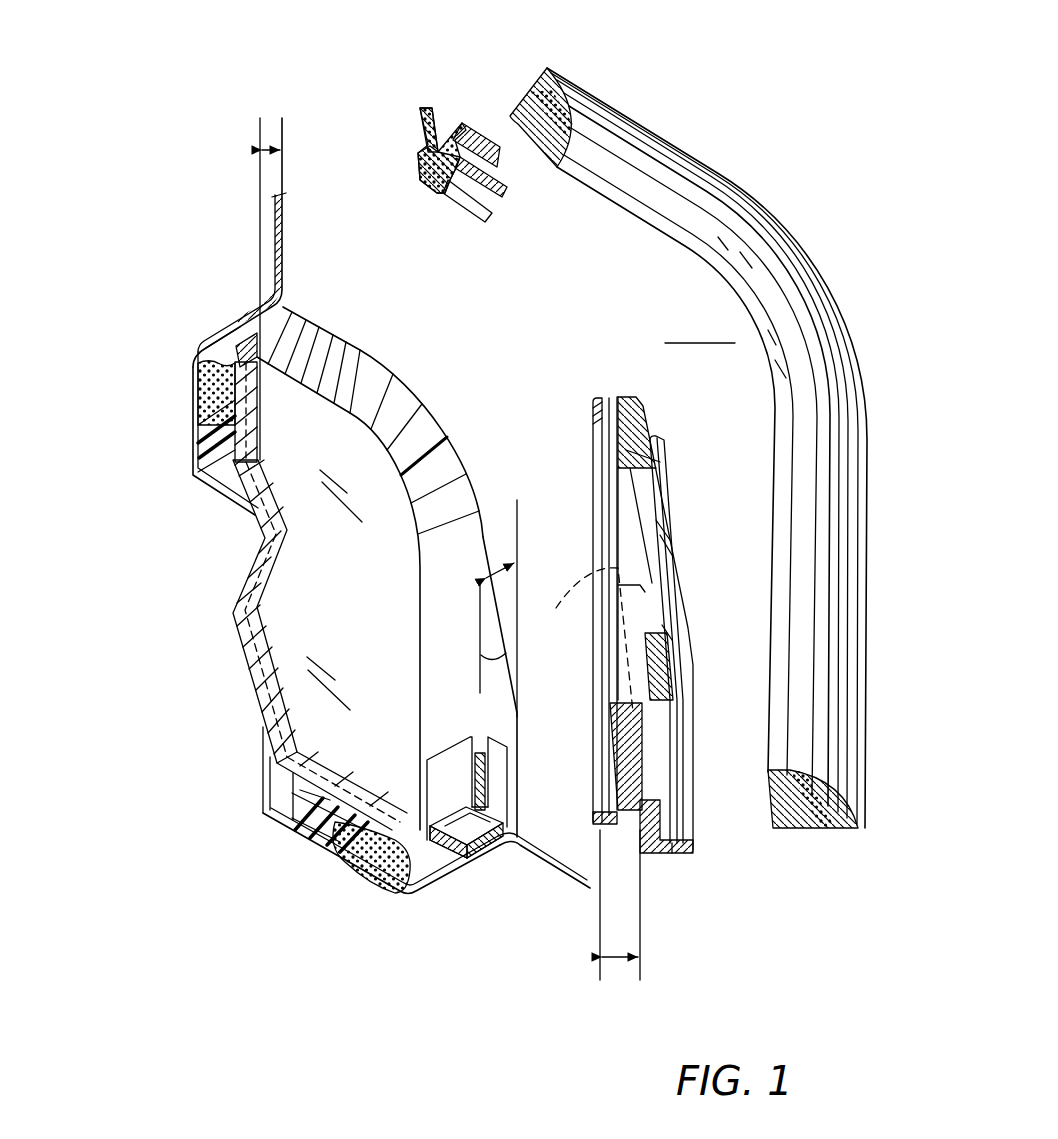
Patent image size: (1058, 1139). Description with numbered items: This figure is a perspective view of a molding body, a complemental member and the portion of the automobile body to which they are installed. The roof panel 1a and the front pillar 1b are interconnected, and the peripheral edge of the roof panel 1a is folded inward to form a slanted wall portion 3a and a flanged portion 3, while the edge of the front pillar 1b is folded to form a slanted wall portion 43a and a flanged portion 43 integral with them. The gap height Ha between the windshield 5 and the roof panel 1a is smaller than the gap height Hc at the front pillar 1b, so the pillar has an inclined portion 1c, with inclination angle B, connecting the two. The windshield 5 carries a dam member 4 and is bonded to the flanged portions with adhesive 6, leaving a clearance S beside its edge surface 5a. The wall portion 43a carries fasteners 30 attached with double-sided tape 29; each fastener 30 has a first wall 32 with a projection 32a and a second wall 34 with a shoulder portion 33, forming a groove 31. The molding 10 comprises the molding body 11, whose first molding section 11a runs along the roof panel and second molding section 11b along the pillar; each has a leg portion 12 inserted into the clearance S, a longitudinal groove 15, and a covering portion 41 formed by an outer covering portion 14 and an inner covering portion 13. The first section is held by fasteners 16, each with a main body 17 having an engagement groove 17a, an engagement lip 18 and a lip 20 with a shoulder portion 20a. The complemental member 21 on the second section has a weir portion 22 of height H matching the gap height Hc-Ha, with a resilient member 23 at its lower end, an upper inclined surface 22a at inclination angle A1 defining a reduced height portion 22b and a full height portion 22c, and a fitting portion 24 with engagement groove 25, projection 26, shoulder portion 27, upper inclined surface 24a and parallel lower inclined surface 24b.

The roof panel 1a is at (270, 230).
The front pillar 1b is at (545, 884).
The inclined portion 1c is at (498, 640).
The flanged portion 3 is at (190, 412).
The slanted wall portion 3a is at (212, 342).
The dam member 4 is at (195, 440).
The front windshield 5 is at (310, 634).
The edge surface 5a is at (196, 365).
The adhesive 6 is at (222, 382).
The molding 10 is at (700, 328).
The molding body 11 is at (768, 362).
The first molding section 11a is at (686, 152).
The second molding section 11b is at (864, 720).
The leg portion 12 is at (516, 140).
The inner covering portion 13 is at (540, 160).
The outer covering portion 14 is at (545, 75).
The groove 15 is at (526, 138).
The fastener 16 is at (412, 180).
The main body 17 is at (418, 160).
The engagement groove 17a is at (466, 126).
The engagement lip 18 is at (420, 115).
The lip 20 is at (456, 195).
The shoulder portion 20a is at (472, 218).
The complemental member 21 is at (641, 400).
The weir portion 22 is at (598, 820).
The upper inclined surface 22a is at (636, 490).
The reduced height portion 22b is at (628, 528).
The full height portion 22c is at (620, 712).
The resilient member 23 is at (578, 888).
The fitting portion 24 is at (676, 858).
The upper inclined surface 24a is at (670, 570).
The lower inclined surface 24b is at (584, 640).
The engagement groove 25 is at (697, 856).
The projection 26 is at (690, 846).
The shoulder portion 27 is at (646, 856).
The double-sided tape 29 is at (500, 832).
The fastener 30 is at (510, 765).
The groove 31 is at (470, 838).
The first wall 32 is at (496, 842).
The projection 32a is at (496, 806).
The shoulder portion 33 is at (446, 838).
The second wall 34 is at (458, 813).
The covering portion 41 is at (562, 130).
The flanged portion 43 is at (308, 878).
The slanted wall portion 43a is at (456, 842).
The inclination angle A1 is at (650, 584).
The inclination angle B is at (493, 636).
The height H is at (620, 912).
The gap height Ha is at (290, 156).
The gap height Hc is at (597, 835).
The gap height difference Hc-Ha is at (490, 575).
The clearance S is at (243, 346).